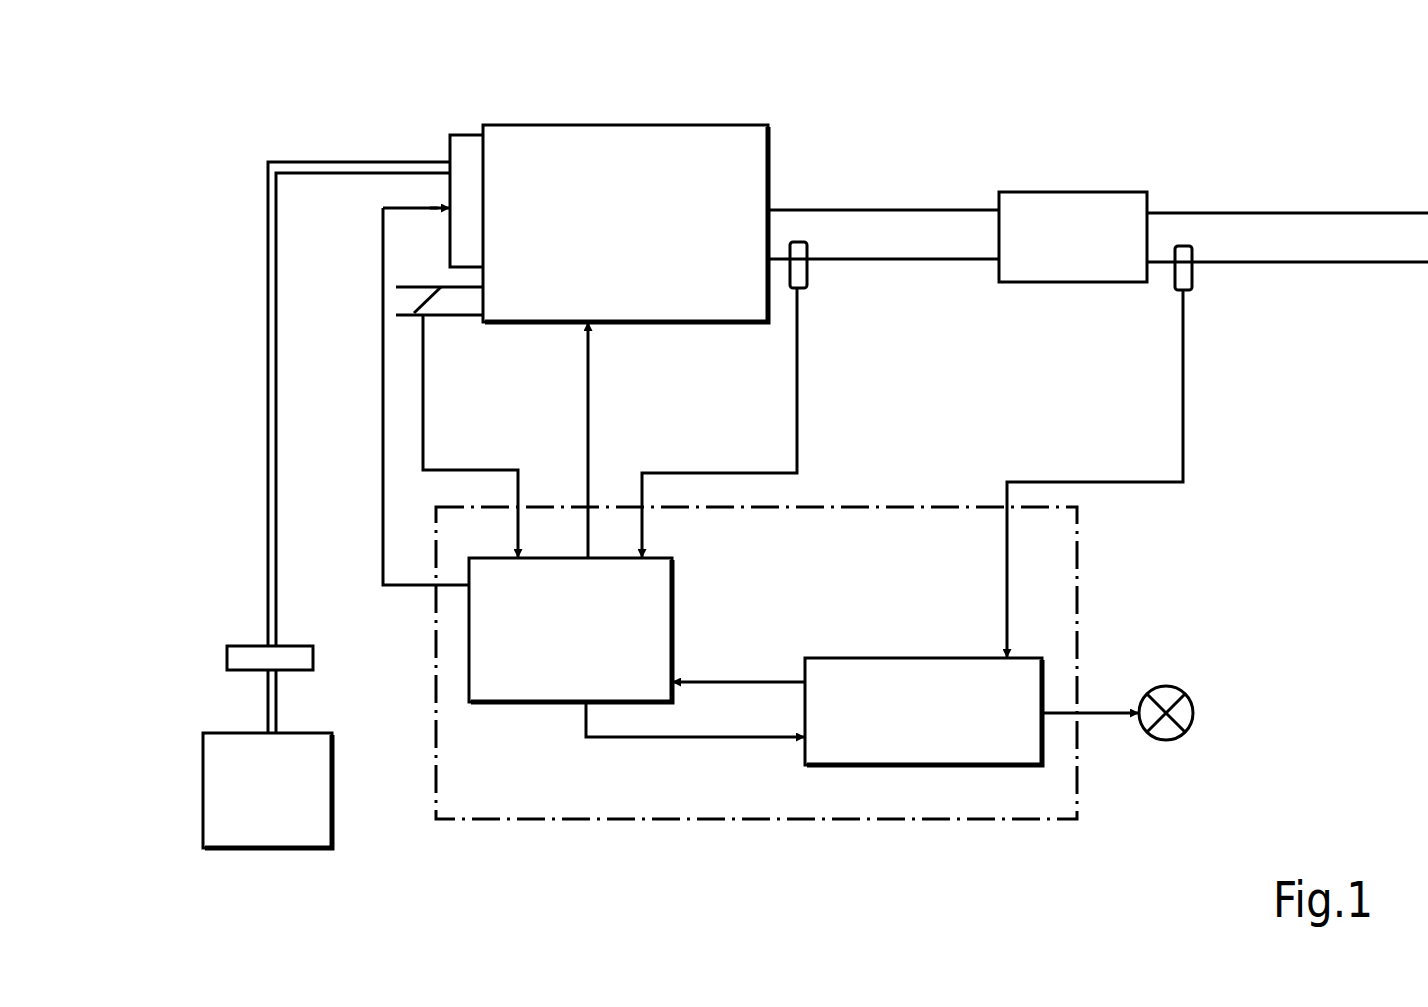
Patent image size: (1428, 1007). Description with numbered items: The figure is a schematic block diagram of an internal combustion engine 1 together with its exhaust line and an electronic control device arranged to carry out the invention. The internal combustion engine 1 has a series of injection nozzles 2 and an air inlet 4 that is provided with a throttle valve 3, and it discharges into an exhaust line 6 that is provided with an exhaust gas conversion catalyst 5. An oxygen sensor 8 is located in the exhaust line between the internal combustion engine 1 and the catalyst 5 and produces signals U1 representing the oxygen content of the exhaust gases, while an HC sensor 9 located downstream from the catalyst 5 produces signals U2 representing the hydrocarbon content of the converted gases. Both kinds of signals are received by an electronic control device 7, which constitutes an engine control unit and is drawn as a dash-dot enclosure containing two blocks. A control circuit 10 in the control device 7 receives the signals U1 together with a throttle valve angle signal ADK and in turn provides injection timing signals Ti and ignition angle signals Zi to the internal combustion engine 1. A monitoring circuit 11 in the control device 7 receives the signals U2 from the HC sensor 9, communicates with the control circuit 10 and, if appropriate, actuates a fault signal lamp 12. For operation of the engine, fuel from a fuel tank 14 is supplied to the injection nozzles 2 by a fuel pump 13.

The internal combustion engine 1 is at (543, 183).
The injection nozzles 2 is at (470, 153).
The throttle valve 3 is at (417, 300).
The air inlet 4 is at (398, 302).
The exhaust gas conversion catalyst 5 is at (1060, 222).
The exhaust line 6 is at (957, 175).
The electronic control device 7 is at (1060, 540).
The oxygen sensor 8 is at (800, 250).
The HC sensor 9 is at (1184, 255).
The control circuit 10 is at (488, 633).
The monitoring circuit 11 is at (1018, 723).
The fault signal lamp 12 is at (1172, 693).
The fuel pump 13 is at (238, 658).
The fuel tank 14 is at (240, 760).
The injection timing signals Ti is at (380, 235).
The throttle valve angle signal ADK is at (423, 375).
The ignition angle signals Zi is at (588, 413).
The oxygen content signals U1 is at (797, 378).
The hydrocarbon content signals U2 is at (1181, 383).